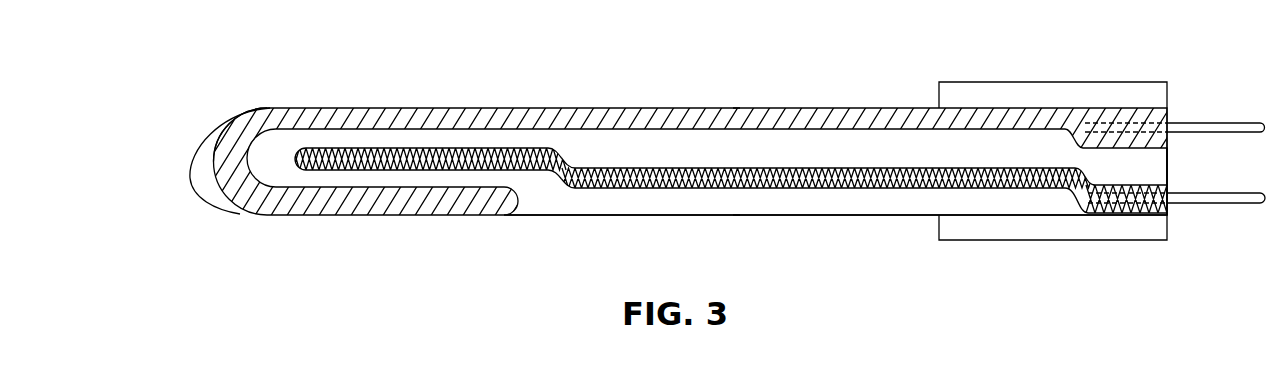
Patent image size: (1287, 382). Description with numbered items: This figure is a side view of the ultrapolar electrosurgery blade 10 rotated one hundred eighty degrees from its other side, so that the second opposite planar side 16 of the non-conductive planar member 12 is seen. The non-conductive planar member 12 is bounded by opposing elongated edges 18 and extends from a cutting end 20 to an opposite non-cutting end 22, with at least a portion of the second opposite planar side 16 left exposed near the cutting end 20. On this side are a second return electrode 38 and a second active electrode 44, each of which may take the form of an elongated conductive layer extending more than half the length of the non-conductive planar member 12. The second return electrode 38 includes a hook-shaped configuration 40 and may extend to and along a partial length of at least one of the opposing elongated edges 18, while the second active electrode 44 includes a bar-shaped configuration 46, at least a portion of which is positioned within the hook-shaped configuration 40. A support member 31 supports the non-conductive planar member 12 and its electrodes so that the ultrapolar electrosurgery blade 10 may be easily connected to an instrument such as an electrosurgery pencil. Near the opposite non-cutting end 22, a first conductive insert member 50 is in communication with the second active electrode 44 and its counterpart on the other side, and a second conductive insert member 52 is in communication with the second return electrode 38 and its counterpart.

The ultrapolar electrosurgery blade 10 is at (816, 77).
The non-conductive planar member 12 is at (583, 214).
The second opposite planar side 16 is at (684, 161).
The opposing elongated edges 18 is at (738, 101).
The cutting end 20 is at (180, 188).
The opposite non-cutting end 22 is at (1177, 161).
The support member 31 is at (1068, 82).
The second return electrode 38 is at (538, 115).
The hook-shaped configuration 40 is at (234, 199).
The second active electrode 44 is at (645, 180).
The bar-shaped configuration 46 is at (460, 158).
The first conductive insert member 50 is at (1208, 203).
The second conductive insert member 52 is at (1213, 127).